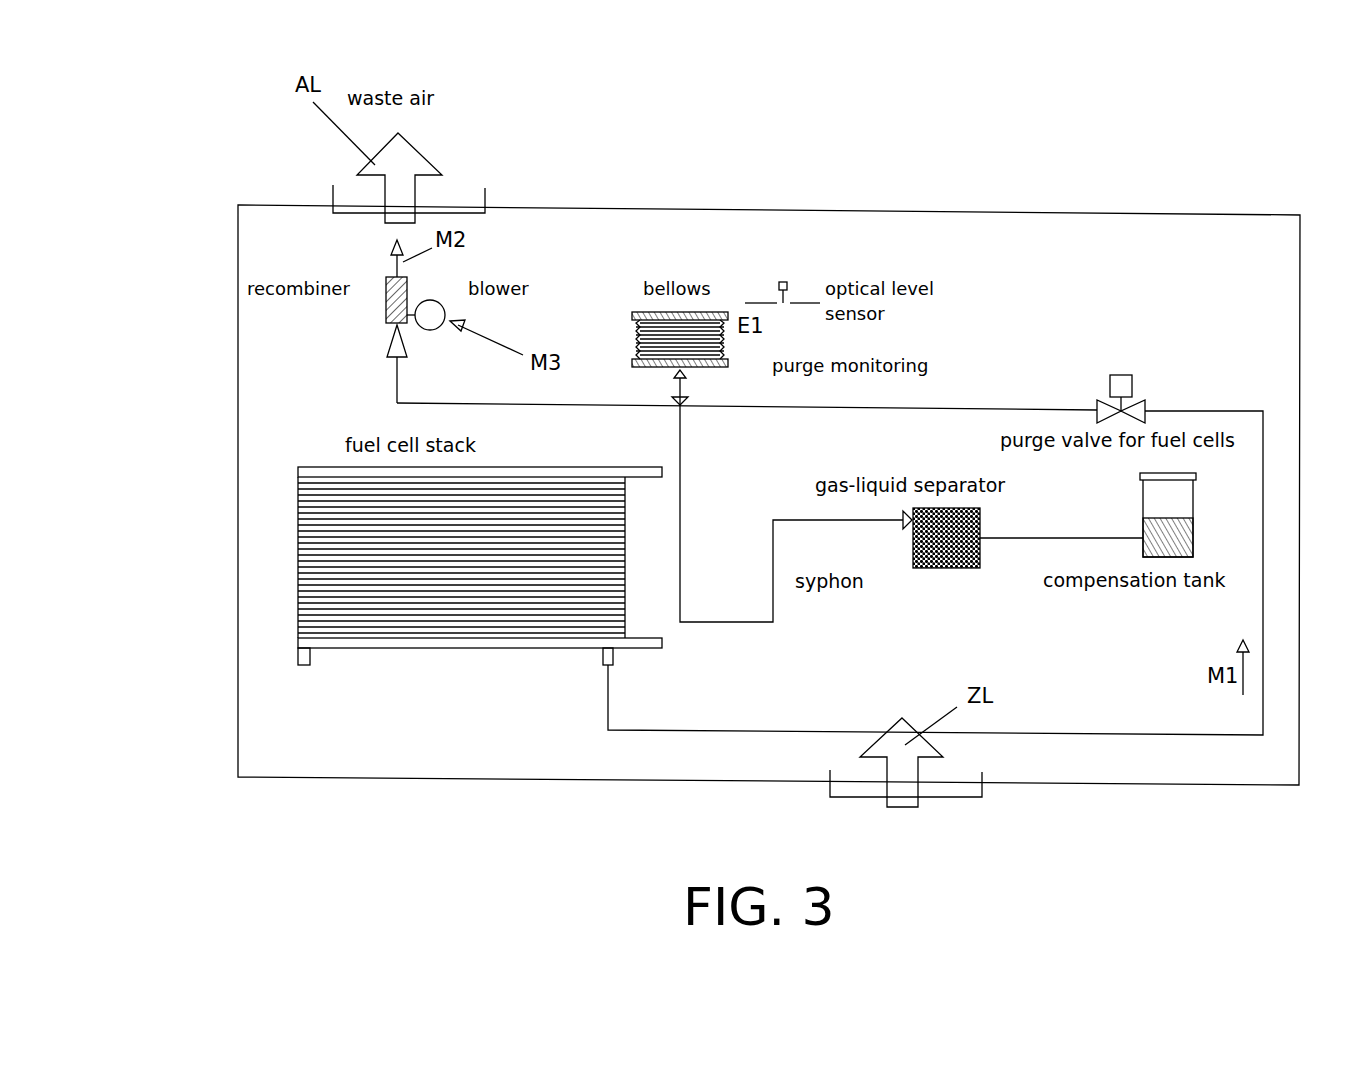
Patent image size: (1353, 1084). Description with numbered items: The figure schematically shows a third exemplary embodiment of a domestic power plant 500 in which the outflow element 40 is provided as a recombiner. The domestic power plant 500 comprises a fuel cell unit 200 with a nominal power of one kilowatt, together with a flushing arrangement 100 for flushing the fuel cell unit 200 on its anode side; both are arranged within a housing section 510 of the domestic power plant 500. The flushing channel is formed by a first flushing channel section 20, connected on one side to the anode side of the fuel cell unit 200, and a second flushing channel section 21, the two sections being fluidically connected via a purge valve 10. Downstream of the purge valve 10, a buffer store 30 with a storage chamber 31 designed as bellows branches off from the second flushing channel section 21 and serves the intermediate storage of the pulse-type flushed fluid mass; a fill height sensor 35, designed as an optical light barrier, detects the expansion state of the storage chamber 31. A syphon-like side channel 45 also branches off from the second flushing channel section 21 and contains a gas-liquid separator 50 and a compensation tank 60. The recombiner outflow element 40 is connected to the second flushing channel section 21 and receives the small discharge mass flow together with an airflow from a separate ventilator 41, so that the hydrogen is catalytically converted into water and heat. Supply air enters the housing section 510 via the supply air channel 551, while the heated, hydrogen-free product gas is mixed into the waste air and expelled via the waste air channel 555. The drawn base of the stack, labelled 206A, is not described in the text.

The purge valve 10 is at (1143, 395).
The first flushing channel section 20 is at (1058, 745).
The second flushing channel section 21 is at (683, 387).
The buffer store 30 is at (735, 283).
The storage chamber 31 is at (632, 326).
The fill height sensor 35 is at (795, 300).
The outflow element 40 is at (386, 278).
The ventilator 41 is at (435, 310).
The side channel 45 is at (725, 622).
The gas-liquid separator 50 is at (940, 555).
The compensation tank 60 is at (1182, 493).
The flushing arrangement 100 is at (1078, 249).
The fuel cell unit 200 is at (328, 560).
The fuel cell stack base 206A is at (468, 648).
The domestic power plant 500 is at (313, 791).
The housing section 510 is at (236, 742).
The supply air channel 551 is at (828, 795).
The waste air channel 555 is at (485, 192).